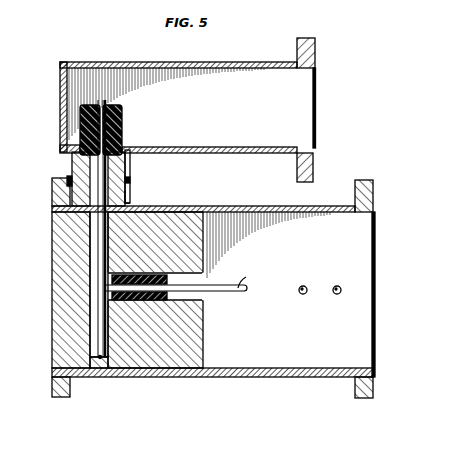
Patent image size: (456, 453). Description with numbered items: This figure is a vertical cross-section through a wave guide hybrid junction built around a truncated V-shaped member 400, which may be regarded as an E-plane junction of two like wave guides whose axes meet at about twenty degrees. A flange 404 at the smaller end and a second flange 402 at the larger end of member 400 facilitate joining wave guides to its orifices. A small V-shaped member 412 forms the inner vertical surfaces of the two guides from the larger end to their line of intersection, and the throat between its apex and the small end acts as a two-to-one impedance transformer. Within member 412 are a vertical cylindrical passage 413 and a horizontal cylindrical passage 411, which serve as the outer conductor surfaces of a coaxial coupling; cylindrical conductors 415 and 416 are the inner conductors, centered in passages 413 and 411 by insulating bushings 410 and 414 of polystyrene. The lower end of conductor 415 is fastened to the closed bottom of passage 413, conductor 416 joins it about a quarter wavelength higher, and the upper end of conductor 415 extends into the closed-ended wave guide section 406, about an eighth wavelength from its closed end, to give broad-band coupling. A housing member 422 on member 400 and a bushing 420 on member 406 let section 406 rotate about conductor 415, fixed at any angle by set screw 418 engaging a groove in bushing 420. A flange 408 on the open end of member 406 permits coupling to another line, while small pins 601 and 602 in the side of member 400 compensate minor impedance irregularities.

The truncated V-shaped member 400 is at (237, 206).
The second flange 402 is at (58, 399).
The flange 404 is at (357, 400).
The section of wave guide 406 is at (92, 62).
The flange 408 is at (316, 40).
The insulating bushing 410 is at (123, 128).
The horizontal cylindrical passage 411 is at (170, 293).
The small V-shaped member 412 is at (203, 343).
The vertical cylindrical passage 413 is at (99, 292).
The insulating bushing 414 is at (160, 297).
The cylindrical conductor 415 is at (96, 262).
The cylindrical conductor 416 is at (256, 274).
The set screw 418 is at (131, 181).
The bushing 420 is at (131, 165).
The housing member 422 is at (131, 196).
The small pin 601 is at (342, 301).
The small pin 602 is at (297, 301).